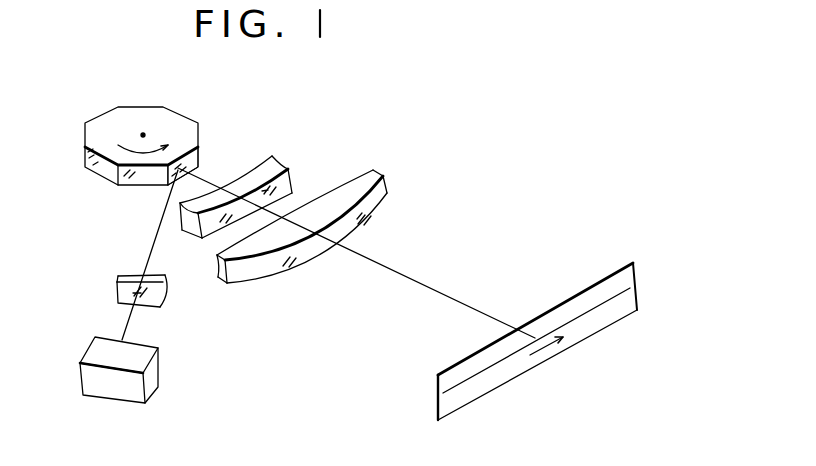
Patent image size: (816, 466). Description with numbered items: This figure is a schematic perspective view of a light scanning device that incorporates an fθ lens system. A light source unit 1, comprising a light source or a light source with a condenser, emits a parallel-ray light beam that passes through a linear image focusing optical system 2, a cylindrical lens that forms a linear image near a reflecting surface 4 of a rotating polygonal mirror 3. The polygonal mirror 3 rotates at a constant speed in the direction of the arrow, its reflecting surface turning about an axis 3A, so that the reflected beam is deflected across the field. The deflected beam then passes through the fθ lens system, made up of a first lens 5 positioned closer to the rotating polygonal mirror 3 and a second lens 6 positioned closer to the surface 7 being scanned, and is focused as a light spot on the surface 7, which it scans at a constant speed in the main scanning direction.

The light source unit 1 is at (93, 356).
The linear image focusing optical system 2 is at (122, 273).
The rotating polygonal mirror 3 is at (138, 132).
The axis 3A is at (143, 135).
The reflecting surface 4 is at (178, 168).
The first lens 5 is at (275, 163).
The second lens 6 is at (375, 170).
The surface being scanned 7 is at (600, 288).